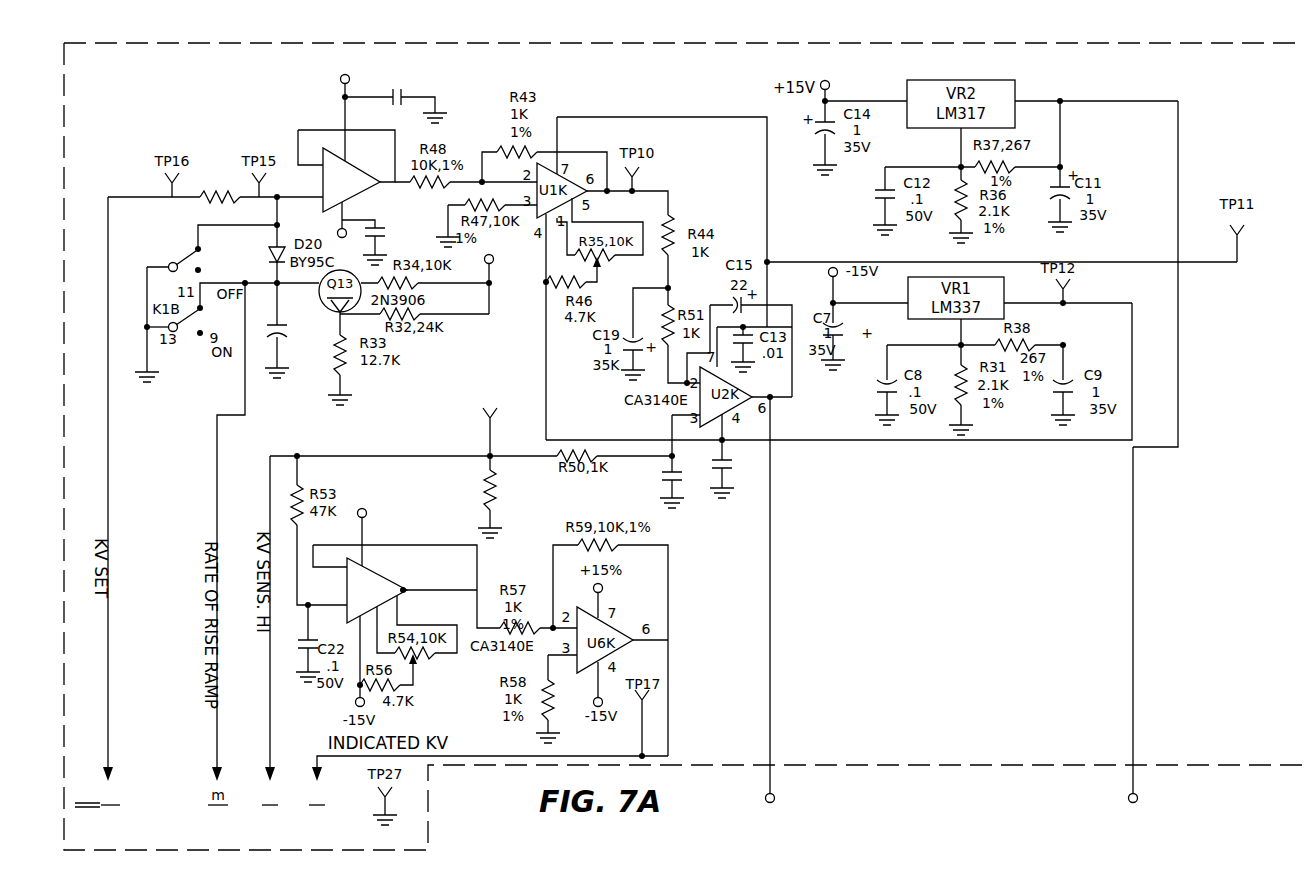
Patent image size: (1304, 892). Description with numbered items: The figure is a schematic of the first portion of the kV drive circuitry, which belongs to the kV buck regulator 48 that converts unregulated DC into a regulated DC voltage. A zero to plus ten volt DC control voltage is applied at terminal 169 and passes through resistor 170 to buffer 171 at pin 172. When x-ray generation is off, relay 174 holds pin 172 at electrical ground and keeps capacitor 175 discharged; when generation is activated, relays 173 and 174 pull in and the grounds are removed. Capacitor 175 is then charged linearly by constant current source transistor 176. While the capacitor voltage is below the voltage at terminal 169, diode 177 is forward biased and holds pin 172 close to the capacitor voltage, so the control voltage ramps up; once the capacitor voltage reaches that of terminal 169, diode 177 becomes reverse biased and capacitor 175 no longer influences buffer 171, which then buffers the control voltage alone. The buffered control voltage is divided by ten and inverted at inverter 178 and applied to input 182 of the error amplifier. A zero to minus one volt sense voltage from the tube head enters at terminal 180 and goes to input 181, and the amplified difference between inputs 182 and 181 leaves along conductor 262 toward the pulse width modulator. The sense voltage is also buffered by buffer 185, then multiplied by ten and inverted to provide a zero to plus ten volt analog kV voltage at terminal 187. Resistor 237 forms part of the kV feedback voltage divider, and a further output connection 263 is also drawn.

The kV buck regulator 48 is at (935, 770).
The terminal 169 is at (120, 800).
The resistor 170 is at (228, 166).
The buffer 171 is at (372, 166).
The pin 172 is at (321, 203).
The relay 173 is at (160, 262).
The relay 174 is at (147, 340).
The capacitor 175 is at (298, 374).
The constant current source transistor 176 is at (298, 346).
The diode 177 is at (237, 237).
The inverter 178 is at (541, 227).
The terminal 180 is at (270, 808).
The input 181 is at (713, 428).
The input 182 is at (671, 417).
The buffer 185 is at (409, 592).
The terminal 187 is at (322, 800).
The resistor 237 is at (537, 482).
The conductor 262 is at (776, 796).
The output terminal 263 is at (1139, 796).